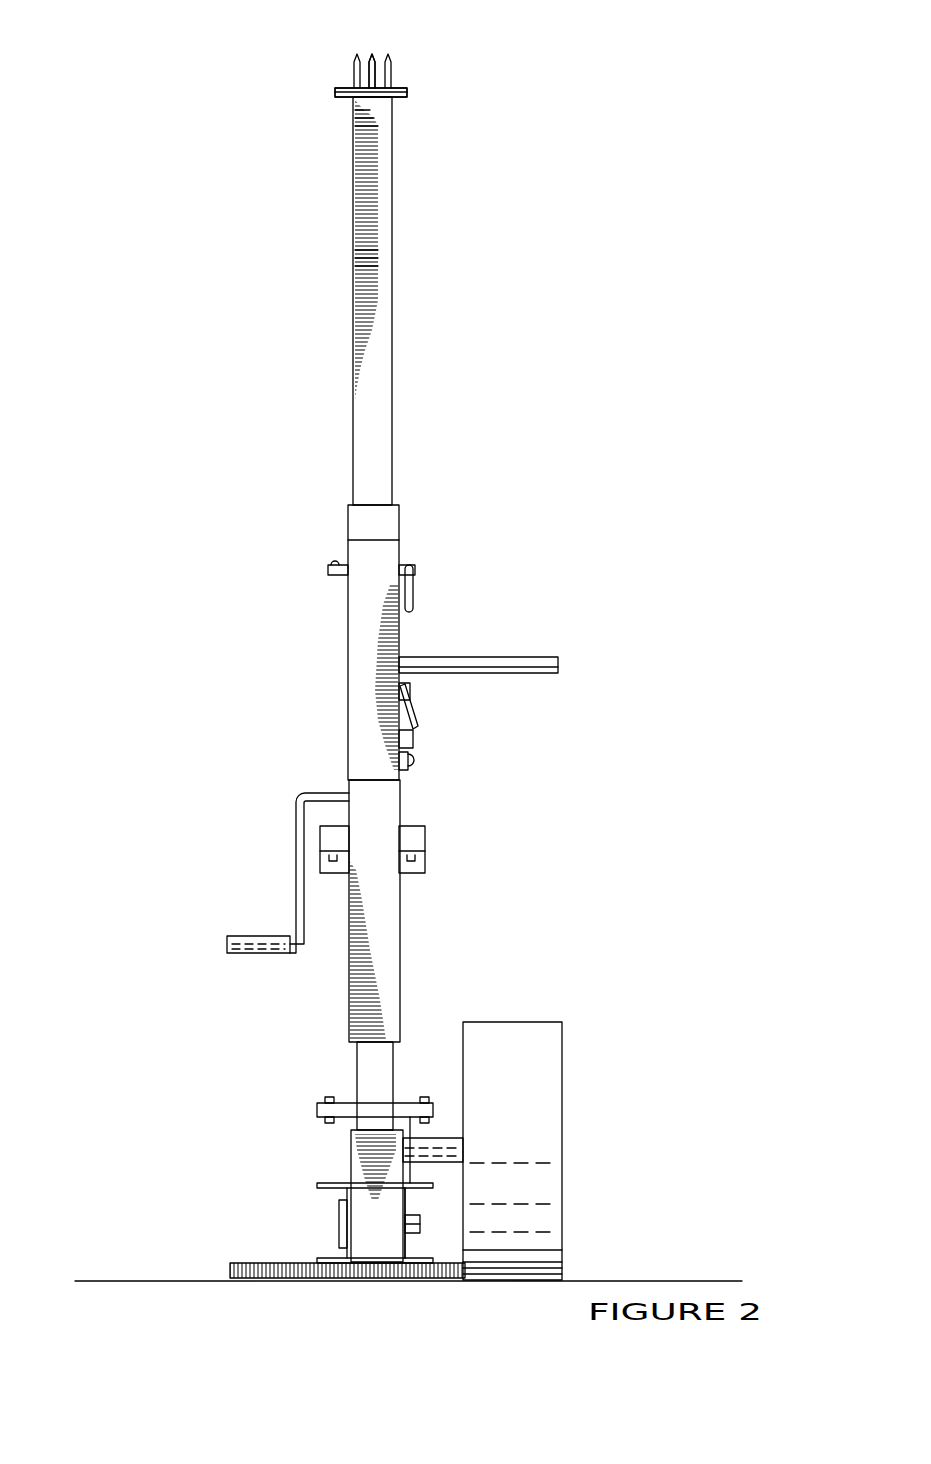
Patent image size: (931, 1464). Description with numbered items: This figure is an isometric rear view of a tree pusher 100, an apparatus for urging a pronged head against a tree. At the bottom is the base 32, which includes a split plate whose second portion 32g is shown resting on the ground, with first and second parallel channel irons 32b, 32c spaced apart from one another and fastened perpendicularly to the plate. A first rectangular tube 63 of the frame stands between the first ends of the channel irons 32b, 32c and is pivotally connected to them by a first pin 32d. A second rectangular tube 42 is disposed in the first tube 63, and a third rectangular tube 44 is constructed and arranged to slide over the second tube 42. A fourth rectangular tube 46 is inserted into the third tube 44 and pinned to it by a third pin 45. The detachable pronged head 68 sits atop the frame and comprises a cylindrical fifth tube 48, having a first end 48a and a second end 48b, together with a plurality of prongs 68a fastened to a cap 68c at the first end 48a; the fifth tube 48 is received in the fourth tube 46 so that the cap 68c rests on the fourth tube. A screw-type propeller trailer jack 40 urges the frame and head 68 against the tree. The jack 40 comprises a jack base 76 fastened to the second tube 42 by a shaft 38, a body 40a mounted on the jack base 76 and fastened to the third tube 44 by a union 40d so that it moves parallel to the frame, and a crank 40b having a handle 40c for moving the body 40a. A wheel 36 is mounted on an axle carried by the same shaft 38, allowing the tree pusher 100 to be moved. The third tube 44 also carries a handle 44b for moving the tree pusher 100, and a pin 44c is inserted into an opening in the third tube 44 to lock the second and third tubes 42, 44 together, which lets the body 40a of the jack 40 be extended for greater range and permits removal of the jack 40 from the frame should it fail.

The tree pusher 100 is at (330, 398).
The detachable pronged head 68 is at (440, 69).
The prongs 68a is at (372, 57).
The cap 68c is at (335, 91).
The fourth rectangular tube 46 is at (392, 403).
The cylindrical fifth tube 48 is at (386, 195).
The first end of the fifth tube 48a is at (383, 125).
The second end of the fifth tube 48b is at (386, 262).
The third rectangular tube 44 is at (398, 598).
The third pin 45 is at (414, 570).
The handle 44b is at (530, 657).
The pin 44c is at (417, 713).
The screw-type propeller trailer jack 40 is at (428, 783).
The body of the jack 40a is at (400, 920).
The crank 40b is at (297, 808).
The handle of the crank 40c is at (232, 937).
The union 40d is at (425, 830).
The second rectangular tube 42 is at (393, 1062).
The jack base 76 is at (317, 1115).
The first rectangular tube 63 is at (350, 1157).
The shaft 38 is at (447, 1132).
The wheel 36 is at (562, 1069).
The base 32 is at (303, 1240).
The first channel iron 32b is at (348, 1196).
The second channel iron 32c is at (405, 1205).
The first pin 32d is at (420, 1228).
The second portion of the split plate 32g is at (383, 1282).